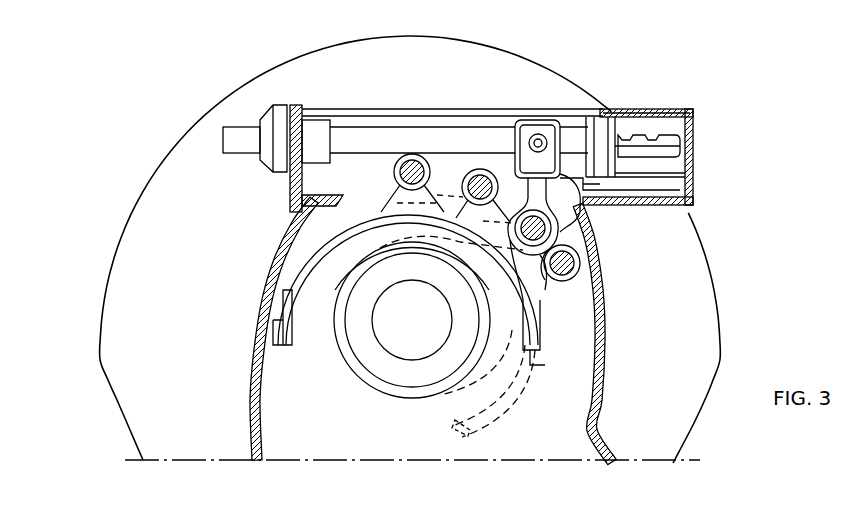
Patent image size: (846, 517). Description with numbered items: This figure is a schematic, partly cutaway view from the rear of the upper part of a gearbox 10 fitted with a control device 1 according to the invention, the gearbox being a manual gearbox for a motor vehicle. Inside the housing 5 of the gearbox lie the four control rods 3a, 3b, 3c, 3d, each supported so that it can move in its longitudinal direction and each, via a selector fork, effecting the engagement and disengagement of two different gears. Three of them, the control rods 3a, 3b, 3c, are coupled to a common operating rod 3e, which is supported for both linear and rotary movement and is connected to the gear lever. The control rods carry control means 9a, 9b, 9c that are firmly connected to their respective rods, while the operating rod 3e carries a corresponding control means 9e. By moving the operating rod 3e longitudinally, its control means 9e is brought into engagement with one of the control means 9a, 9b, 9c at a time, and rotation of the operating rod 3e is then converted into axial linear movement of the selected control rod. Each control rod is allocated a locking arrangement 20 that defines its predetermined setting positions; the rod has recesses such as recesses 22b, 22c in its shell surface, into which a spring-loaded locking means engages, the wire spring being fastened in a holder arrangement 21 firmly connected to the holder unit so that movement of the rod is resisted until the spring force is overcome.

The control device 1 is at (414, 85).
The control rod 3a is at (567, 281).
The control rod 3b is at (553, 234).
The control rod 3c is at (482, 168).
The control rod 3d is at (395, 172).
The operating rod 3e is at (338, 133).
The housing 5 is at (275, 245).
The control means 9a is at (568, 220).
The control means 9b is at (600, 193).
The control means 9c is at (520, 185).
The control means 9e is at (547, 150).
The gearbox 10 is at (168, 163).
The locking arrangement 20 is at (626, 96).
The holder arrangement 21 is at (612, 178).
The recess 22b is at (625, 138).
The recess 22c is at (665, 110).